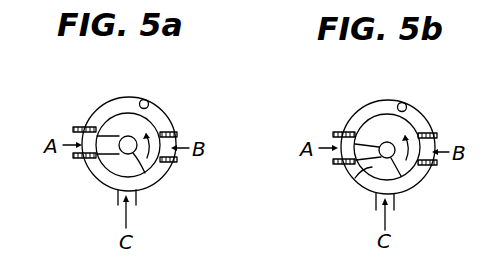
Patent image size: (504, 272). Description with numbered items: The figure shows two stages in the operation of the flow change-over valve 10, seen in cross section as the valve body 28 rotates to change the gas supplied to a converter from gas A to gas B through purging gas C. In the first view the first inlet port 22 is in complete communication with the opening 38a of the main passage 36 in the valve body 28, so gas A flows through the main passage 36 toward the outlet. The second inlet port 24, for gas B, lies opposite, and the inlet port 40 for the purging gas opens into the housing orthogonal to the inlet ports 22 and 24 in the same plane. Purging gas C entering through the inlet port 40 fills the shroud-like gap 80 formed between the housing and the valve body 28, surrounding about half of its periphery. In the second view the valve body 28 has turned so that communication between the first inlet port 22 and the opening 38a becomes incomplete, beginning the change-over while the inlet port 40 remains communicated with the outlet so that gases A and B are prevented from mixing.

In FIG. 5a, the flow change-over valve 10 is at (78, 91).
In FIG. 5b, the flow change-over valve 10 is at (340, 98).
In FIG. 5a, the first inlet port 22 is at (78, 128).
In FIG. 5b, the first inlet port 22 is at (339, 131).
In FIG. 5a, the second inlet port 24 is at (175, 131).
In FIG. 5b, the second inlet port 24 is at (434, 135).
In FIG. 5a, the valve body 28 is at (109, 163).
In FIG. 5b, the valve body 28 is at (353, 178).
In FIG. 5a, the main passage 36 is at (147, 176).
In FIG. 5b, the main passage 36 is at (409, 183).
In FIG. 5a, the opening of the main passage 38a is at (104, 141).
In FIG. 5b, the opening of the main passage 38a is at (366, 139).
In FIG. 5a, the inlet port for purging gas 40 is at (116, 199).
In FIG. 5b, the inlet port for purging gas 40 is at (378, 204).
In FIG. 5a, the shroud-like gap 80 is at (148, 99).
In FIG. 5b, the shroud-like gap 80 is at (404, 103).